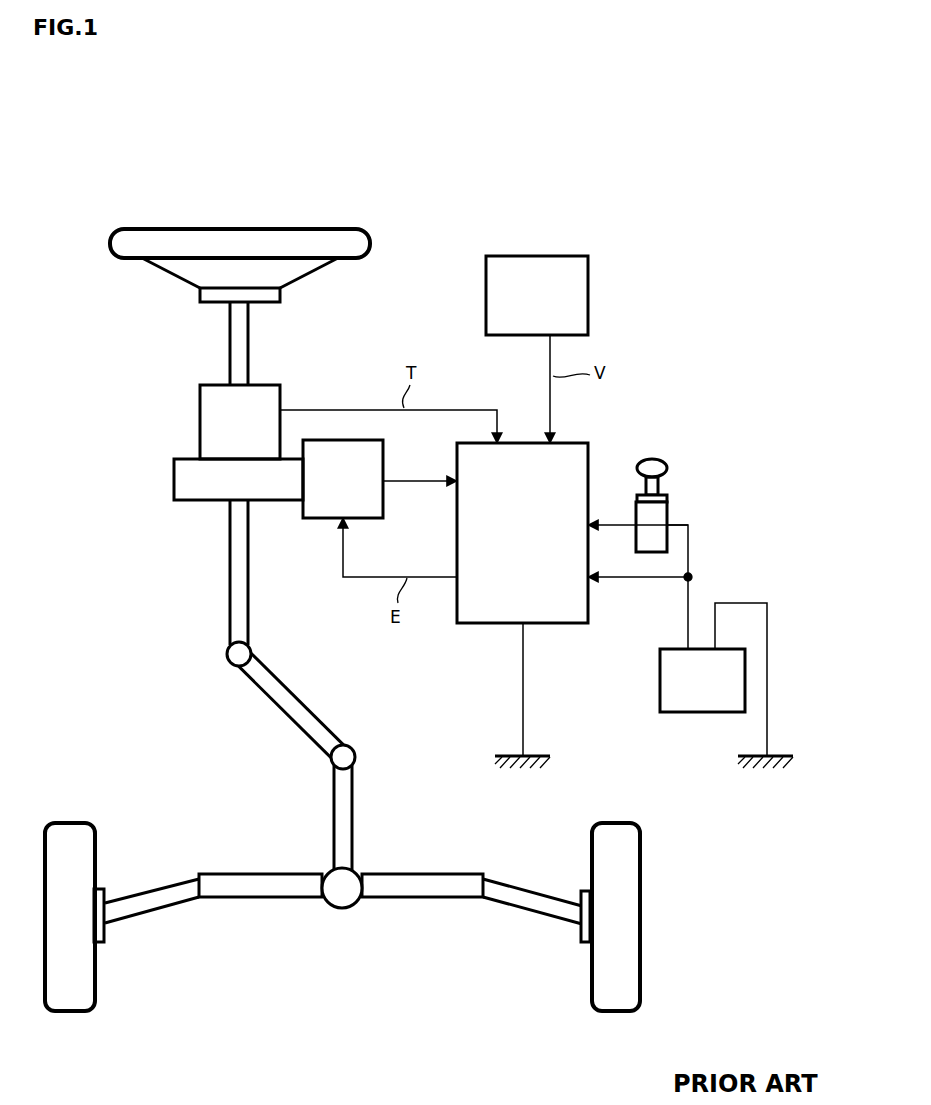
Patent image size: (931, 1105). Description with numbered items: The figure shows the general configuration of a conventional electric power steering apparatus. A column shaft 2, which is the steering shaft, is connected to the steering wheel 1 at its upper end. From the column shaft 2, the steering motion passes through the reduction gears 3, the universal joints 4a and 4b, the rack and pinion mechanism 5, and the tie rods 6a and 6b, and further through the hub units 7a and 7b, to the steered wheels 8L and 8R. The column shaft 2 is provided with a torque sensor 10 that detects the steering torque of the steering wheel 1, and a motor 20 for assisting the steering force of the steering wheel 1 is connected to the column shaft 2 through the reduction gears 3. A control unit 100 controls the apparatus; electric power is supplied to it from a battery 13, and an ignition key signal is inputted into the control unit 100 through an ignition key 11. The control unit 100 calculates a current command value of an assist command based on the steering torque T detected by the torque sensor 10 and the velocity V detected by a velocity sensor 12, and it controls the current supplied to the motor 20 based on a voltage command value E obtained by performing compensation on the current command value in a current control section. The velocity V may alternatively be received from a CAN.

The steering wheel 1 is at (372, 240).
The column shaft 2 is at (230, 347).
The reduction gears 3 is at (174, 483).
The universal joint 4a is at (227, 660).
The universal joint 4b is at (331, 762).
The rack and pinion mechanism 5 is at (355, 868).
The tie rod 6a is at (135, 893).
The tie rod 6b is at (512, 885).
The hub unit 7a is at (105, 936).
The hub unit 7b is at (579, 938).
The steered wheel 8L is at (93, 997).
The steered wheel 8R is at (588, 997).
The torque sensor 10 is at (200, 412).
The ignition key 11 is at (668, 466).
The velocity sensor 12 is at (590, 268).
The battery 13 is at (660, 673).
The motor 20 is at (383, 450).
The control unit 100 is at (590, 447).